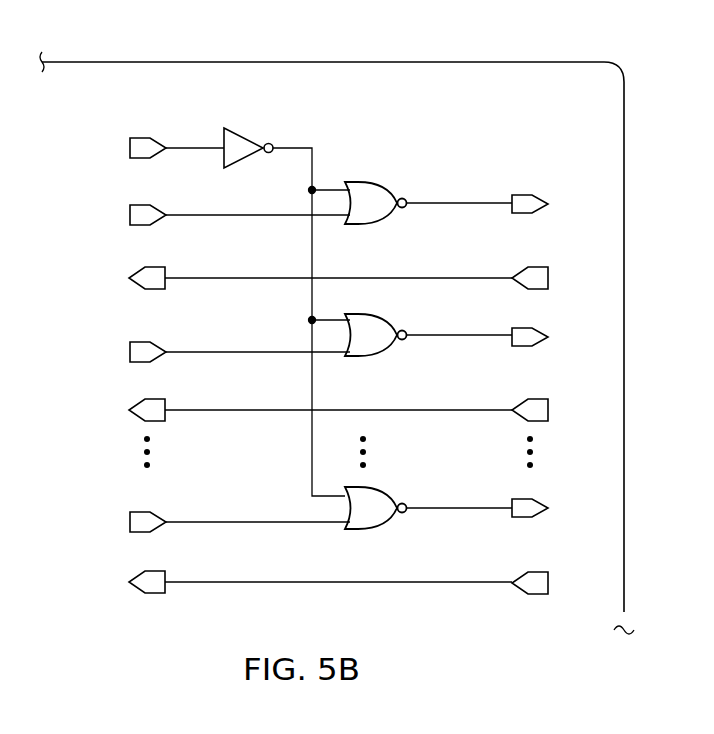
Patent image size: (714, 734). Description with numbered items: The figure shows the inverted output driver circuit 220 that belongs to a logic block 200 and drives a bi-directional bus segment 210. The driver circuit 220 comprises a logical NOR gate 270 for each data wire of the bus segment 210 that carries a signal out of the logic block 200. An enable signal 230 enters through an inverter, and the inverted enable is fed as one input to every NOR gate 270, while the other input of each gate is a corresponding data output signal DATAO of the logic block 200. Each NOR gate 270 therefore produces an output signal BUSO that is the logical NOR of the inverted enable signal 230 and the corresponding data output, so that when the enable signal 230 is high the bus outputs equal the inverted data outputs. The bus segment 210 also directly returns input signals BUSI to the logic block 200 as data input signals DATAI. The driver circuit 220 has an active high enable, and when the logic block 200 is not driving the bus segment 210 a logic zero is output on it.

The logic block 200 is at (536, 66).
The bi-directional bus segment 210 is at (570, 283).
The inverted output driver circuit 220 is at (318, 307).
The enable signal 230 is at (130, 148).
The logical NOR gate 270 is at (470, 163).